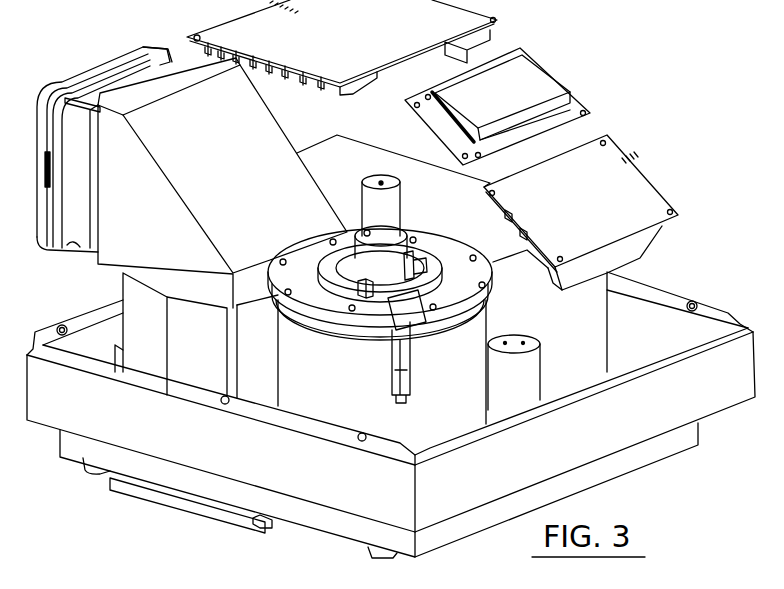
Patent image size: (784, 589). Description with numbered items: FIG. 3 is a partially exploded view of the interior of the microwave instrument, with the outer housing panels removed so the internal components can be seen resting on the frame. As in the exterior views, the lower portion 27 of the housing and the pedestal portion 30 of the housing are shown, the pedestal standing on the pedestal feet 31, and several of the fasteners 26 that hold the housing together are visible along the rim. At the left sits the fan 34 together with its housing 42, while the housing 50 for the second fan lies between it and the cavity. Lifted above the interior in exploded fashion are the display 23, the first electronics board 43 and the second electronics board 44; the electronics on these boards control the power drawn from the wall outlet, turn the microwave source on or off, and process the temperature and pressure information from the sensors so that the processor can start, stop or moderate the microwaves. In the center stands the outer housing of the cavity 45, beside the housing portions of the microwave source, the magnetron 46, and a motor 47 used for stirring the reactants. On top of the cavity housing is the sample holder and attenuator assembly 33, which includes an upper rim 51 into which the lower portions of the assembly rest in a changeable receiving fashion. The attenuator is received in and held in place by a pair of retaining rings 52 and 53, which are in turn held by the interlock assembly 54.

The display 23 is at (517, 104).
The fasteners 26 is at (60, 323).
The lower portion of the housing 27 is at (726, 394).
The pedestal portion of the housing 30 is at (663, 451).
The pedestal feet 31 is at (90, 471).
The sample holder and attenuator assembly 33 is at (416, 265).
The fan 34 is at (107, 68).
The fan housing 42 is at (249, 176).
The first electronics board 43 is at (357, 36).
The second electronics board 44 is at (600, 207).
The outer housing of the cavity 45 is at (459, 390).
The magnetron 46 is at (212, 352).
The motor 47 is at (529, 392).
The housing for the second fan 50 is at (354, 167).
The upper rim 51 is at (330, 266).
The retaining ring 52 is at (487, 294).
The retaining ring 53 is at (488, 309).
The interlock assembly 54 is at (398, 368).